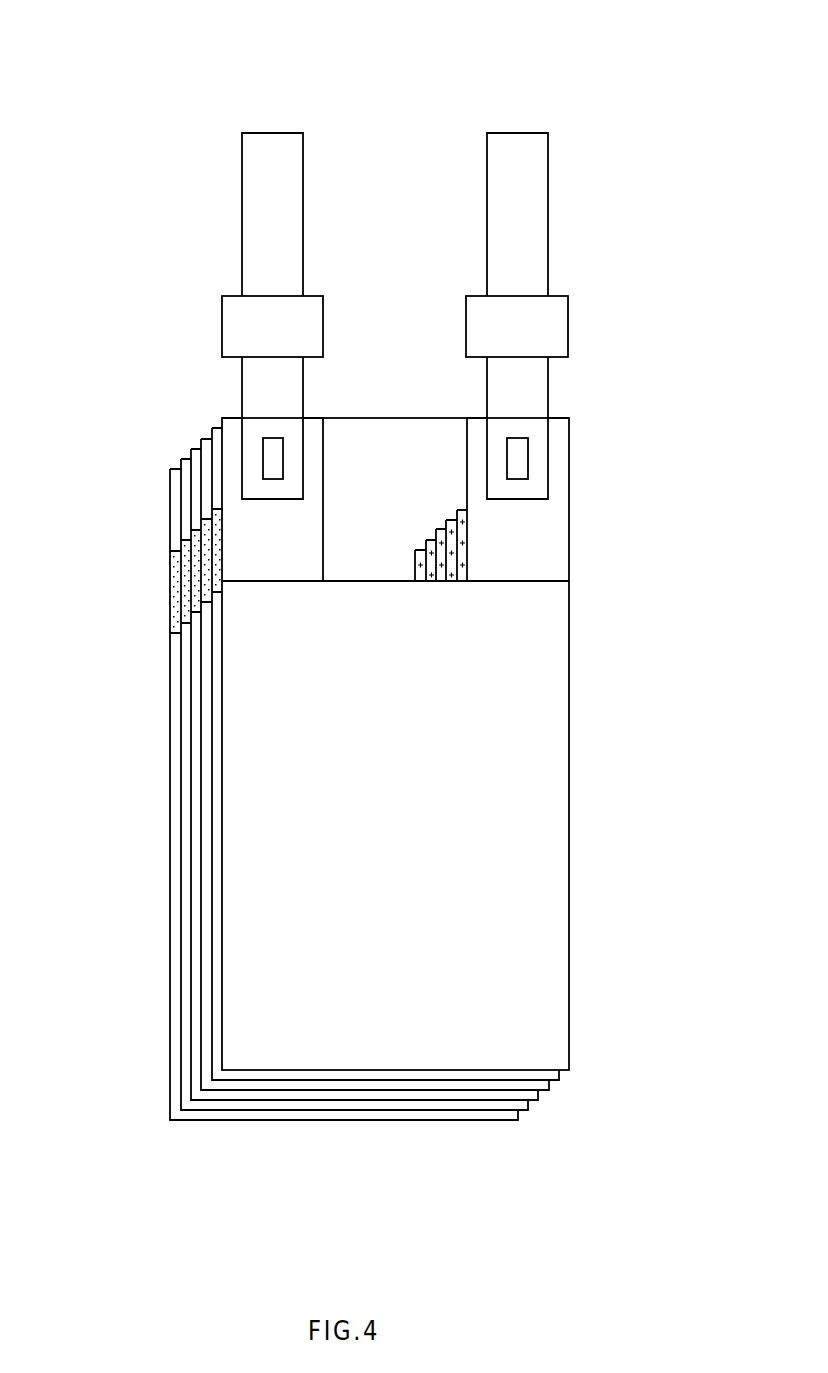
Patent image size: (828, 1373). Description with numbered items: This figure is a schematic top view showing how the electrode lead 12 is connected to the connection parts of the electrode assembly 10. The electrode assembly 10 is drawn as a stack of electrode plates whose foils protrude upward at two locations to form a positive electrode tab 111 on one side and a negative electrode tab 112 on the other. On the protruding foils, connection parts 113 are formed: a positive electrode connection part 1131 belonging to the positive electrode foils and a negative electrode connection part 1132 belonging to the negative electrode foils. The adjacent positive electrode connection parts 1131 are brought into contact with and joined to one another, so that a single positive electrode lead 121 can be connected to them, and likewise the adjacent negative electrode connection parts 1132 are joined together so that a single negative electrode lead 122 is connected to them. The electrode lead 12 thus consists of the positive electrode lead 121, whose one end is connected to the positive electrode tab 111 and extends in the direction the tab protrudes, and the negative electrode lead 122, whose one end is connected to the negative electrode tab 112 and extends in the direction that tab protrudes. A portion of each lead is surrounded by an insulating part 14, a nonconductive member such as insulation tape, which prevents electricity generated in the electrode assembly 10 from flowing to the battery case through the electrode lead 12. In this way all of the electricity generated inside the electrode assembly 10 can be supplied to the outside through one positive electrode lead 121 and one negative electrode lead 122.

The electrode assembly 10 is at (604, 799).
The positive electrode tab 111 is at (155, 605).
The negative electrode tab 112 is at (395, 563).
The connection part 113 is at (395, 448).
The positive electrode connection part 1131 is at (310, 445).
The negative electrode connection part 1132 is at (491, 472).
The electrode lead 12 is at (395, 249).
The positive electrode lead 121 is at (270, 132).
The negative electrode lead 122 is at (517, 282).
The insulating part 14 is at (312, 305).